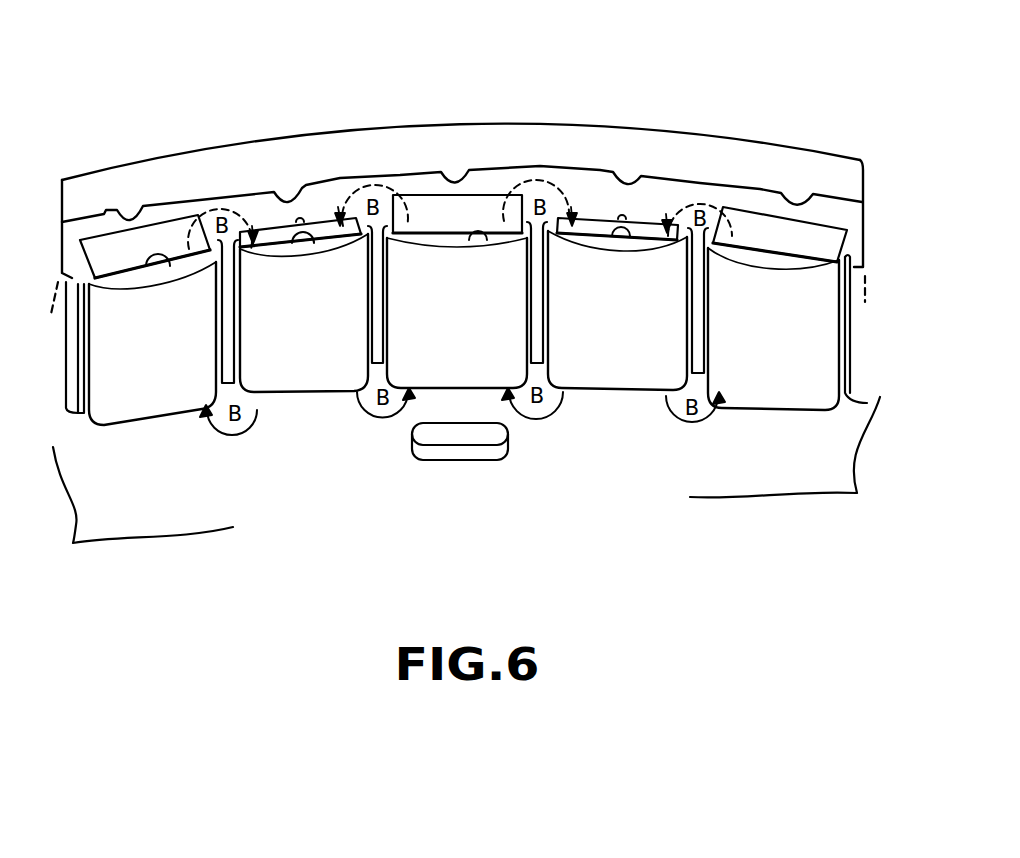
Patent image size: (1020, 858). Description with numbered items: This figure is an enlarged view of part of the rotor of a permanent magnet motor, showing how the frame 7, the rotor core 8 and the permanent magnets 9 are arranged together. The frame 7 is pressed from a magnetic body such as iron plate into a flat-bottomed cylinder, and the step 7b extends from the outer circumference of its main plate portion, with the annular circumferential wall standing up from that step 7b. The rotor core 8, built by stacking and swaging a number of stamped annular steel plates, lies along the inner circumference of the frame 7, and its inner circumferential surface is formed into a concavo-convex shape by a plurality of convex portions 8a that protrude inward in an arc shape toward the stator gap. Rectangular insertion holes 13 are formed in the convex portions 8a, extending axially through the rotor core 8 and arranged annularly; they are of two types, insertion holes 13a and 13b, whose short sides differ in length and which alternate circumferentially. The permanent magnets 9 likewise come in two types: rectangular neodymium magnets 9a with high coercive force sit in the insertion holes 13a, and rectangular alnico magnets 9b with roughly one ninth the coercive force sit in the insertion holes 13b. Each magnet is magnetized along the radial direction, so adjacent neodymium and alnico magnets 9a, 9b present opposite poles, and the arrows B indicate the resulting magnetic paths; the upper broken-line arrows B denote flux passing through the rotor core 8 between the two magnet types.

The frame 7 is at (633, 128).
The step 7b is at (840, 448).
The rotor core 8 is at (712, 182).
The convex portion 8a is at (138, 373).
The permanent magnet 9 is at (162, 88).
The neodymium magnet 9a is at (262, 227).
The alnico magnet 9b is at (172, 262).
The insertion hole 13 is at (213, 485).
The insertion hole 13a is at (313, 255).
The insertion hole 13b is at (172, 268).